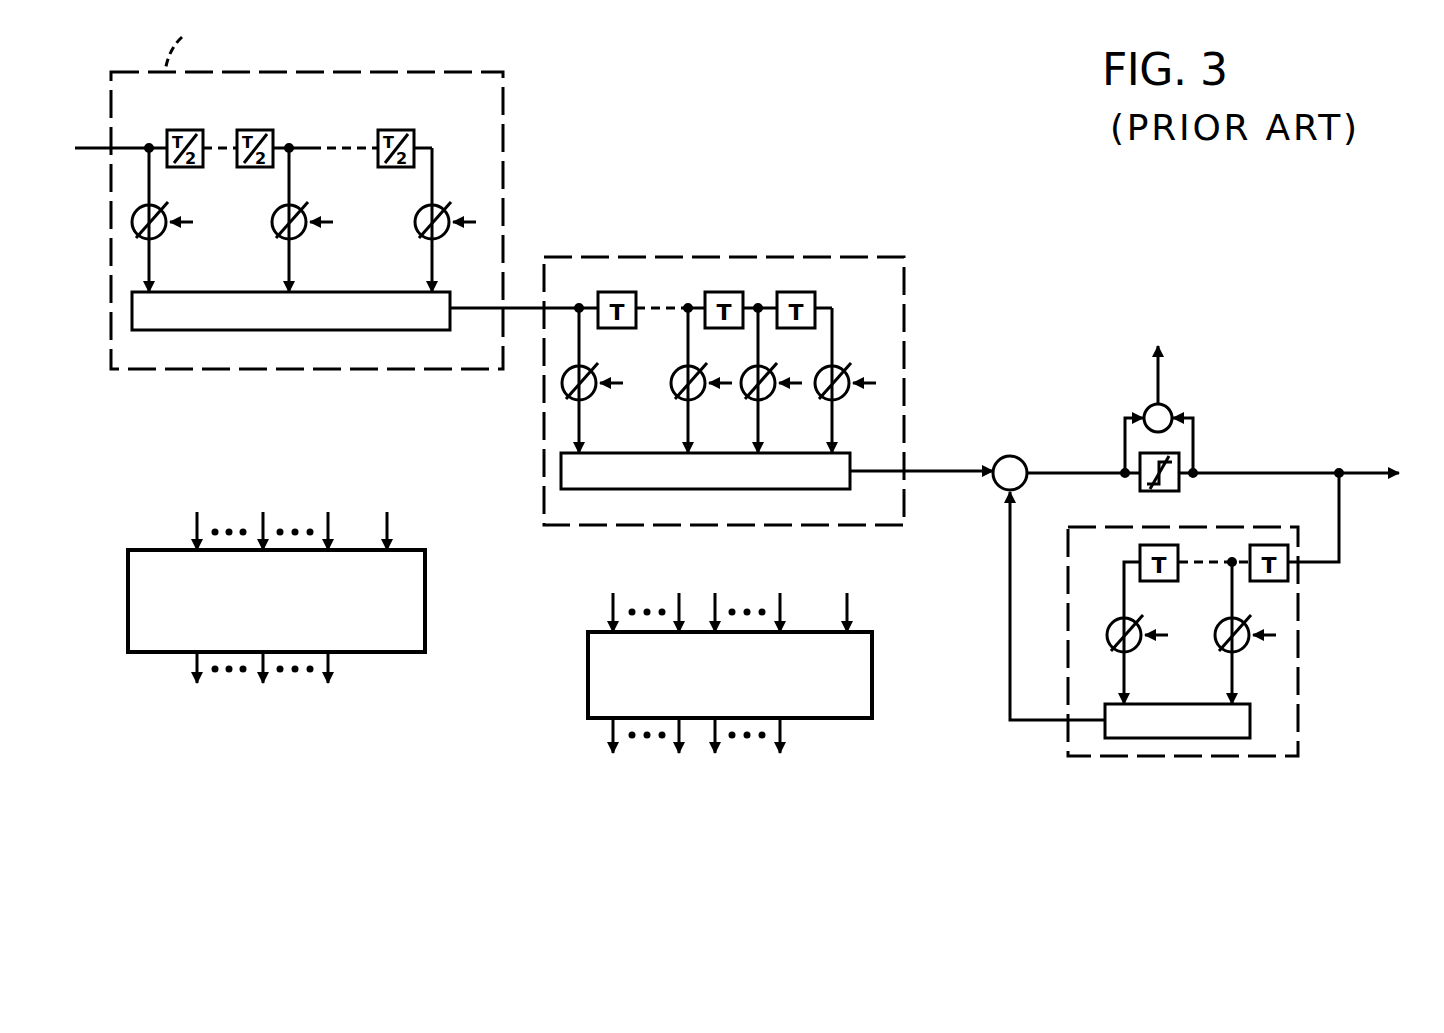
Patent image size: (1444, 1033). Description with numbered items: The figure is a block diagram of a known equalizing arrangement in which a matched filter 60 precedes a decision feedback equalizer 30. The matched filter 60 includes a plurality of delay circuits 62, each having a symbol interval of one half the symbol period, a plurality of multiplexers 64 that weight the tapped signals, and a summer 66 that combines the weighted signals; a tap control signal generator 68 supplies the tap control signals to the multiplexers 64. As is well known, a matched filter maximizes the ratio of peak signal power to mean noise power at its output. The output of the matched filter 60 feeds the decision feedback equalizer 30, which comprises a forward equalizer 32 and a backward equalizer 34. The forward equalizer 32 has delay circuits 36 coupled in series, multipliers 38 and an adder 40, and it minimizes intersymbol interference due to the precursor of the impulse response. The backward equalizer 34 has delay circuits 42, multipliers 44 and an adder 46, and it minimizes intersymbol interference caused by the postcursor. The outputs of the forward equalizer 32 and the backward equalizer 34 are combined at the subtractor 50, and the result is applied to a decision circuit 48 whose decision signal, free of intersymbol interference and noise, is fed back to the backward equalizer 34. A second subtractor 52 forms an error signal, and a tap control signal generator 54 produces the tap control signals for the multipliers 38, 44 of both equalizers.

The decision feedback equalizer 30 is at (1044, 253).
The forward equalizer 32 is at (904, 350).
The backward equalizer 34 is at (1298, 690).
The delay circuits 36 is at (619, 292).
The multipliers 38 is at (590, 397).
The adder 40 is at (733, 489).
The delay circuits 42 is at (1147, 545).
The multipliers 44 is at (1135, 650).
The adder 46 is at (1250, 720).
The decision circuit 48 is at (1140, 487).
The subtractor 50 is at (1011, 456).
The subtractor 52 is at (1167, 408).
The tap control signal generator 54 is at (872, 668).
The matched filter 60 is at (504, 127).
The delay circuits 62 is at (178, 130).
The multiplexers 64 is at (160, 236).
The summer of matched filter 66 is at (322, 330).
The tap control signal generator 68 is at (425, 603).